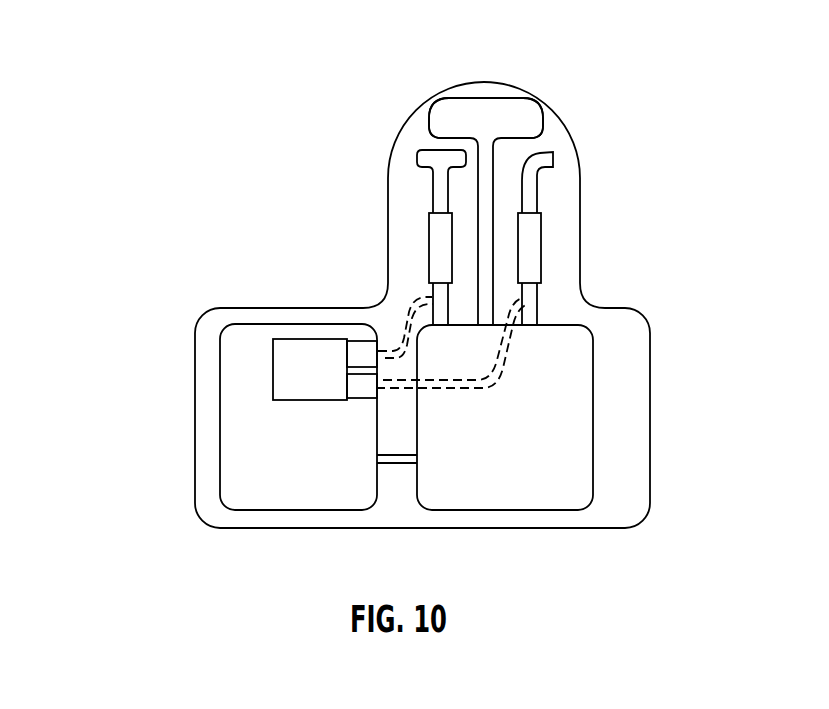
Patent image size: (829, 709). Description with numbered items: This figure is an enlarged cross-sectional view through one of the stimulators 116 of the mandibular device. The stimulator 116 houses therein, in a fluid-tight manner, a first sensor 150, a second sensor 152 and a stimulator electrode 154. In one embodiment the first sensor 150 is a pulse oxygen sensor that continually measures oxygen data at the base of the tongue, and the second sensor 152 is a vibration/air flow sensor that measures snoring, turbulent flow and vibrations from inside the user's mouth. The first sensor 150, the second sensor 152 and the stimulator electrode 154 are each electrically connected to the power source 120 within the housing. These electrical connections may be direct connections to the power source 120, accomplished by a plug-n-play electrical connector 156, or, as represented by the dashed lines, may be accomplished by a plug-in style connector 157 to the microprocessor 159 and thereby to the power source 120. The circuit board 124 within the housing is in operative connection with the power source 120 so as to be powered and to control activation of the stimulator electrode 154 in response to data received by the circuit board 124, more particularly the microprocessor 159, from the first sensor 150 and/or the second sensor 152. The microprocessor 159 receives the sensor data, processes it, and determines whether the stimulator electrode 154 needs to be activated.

The stimulator 116 is at (580, 250).
The power source 120 is at (528, 463).
The circuit board 124 is at (322, 463).
The first sensor 150 is at (427, 139).
The second sensor 152 is at (553, 157).
The stimulator electrode 154 is at (485, 112).
The plug-n-play electrical connector 156 is at (518, 248).
The plug-in style connector 157 is at (357, 387).
The microprocessor 159 is at (273, 368).